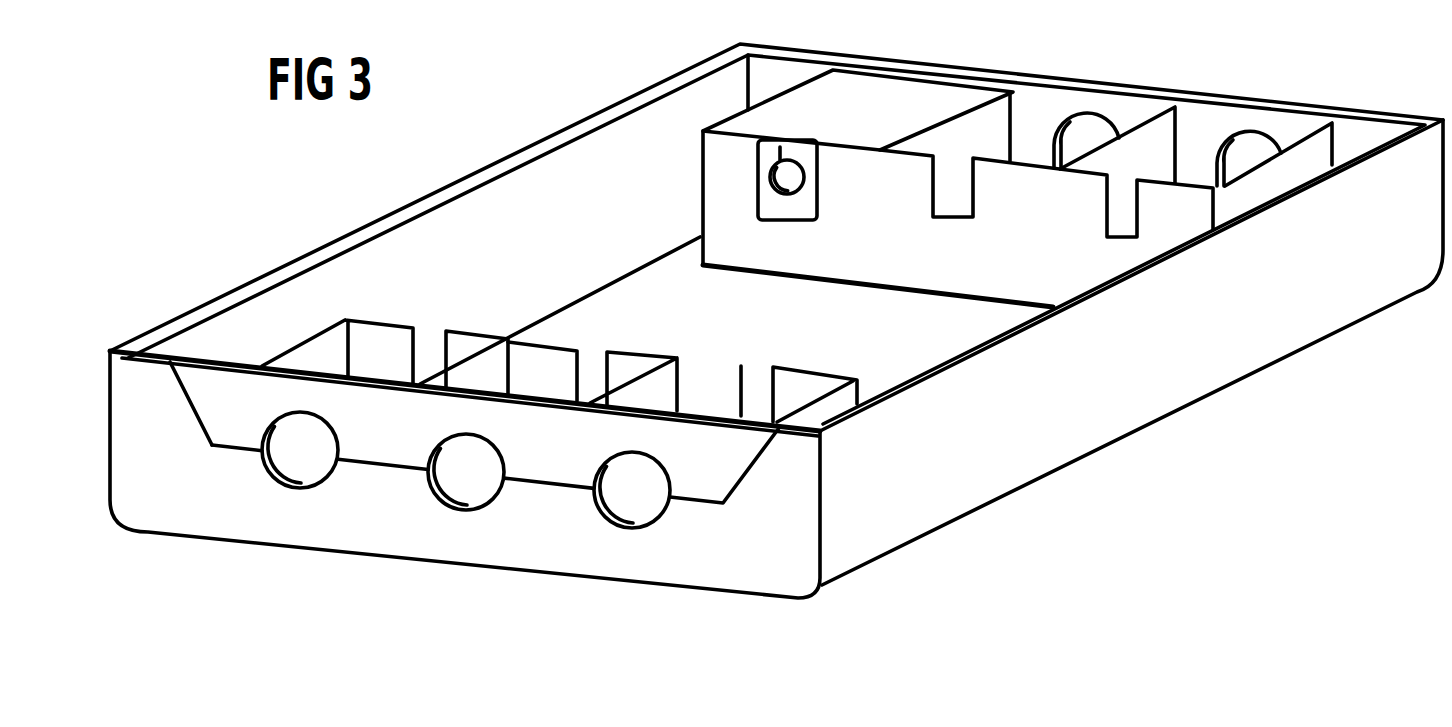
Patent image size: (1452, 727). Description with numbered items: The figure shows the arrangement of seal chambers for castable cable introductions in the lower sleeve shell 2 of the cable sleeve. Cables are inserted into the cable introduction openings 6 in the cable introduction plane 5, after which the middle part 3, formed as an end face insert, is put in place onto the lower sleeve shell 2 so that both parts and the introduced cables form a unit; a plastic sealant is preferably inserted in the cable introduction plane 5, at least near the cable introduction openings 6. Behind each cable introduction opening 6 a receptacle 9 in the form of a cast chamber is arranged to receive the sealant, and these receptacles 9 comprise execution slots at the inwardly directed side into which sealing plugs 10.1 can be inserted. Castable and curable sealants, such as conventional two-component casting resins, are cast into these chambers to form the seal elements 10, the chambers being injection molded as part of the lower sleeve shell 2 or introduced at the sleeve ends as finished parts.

The lower sleeve shell 2 is at (1006, 450).
The middle part 3 is at (386, 432).
The cable introduction plane 5 is at (236, 446).
The cable introduction openings 6 is at (478, 492).
The receptacles 9 is at (721, 392).
The seal elements 10 is at (878, 101).
The sealing plugs 10.1 is at (768, 206).